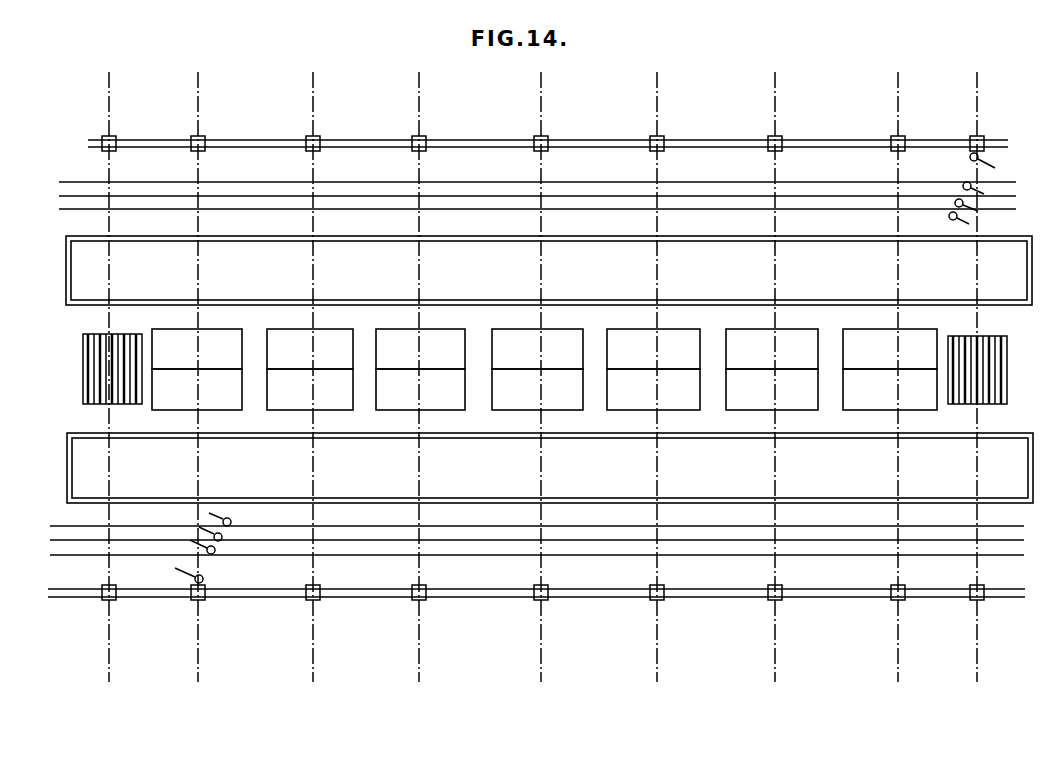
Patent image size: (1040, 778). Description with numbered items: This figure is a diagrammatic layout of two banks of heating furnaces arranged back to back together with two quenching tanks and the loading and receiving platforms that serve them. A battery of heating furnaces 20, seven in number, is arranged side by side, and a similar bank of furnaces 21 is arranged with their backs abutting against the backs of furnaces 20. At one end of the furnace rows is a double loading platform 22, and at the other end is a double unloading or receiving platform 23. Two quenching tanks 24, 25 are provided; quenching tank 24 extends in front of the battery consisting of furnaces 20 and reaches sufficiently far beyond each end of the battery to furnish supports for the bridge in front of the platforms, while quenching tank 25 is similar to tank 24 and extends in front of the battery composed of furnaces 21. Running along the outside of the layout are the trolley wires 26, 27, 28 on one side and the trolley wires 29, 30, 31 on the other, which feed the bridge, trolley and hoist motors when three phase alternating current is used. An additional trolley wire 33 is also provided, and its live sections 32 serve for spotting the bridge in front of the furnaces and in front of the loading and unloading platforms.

The battery of heating furnaces 20 is at (220, 406).
The bank of furnaces 21 is at (229, 335).
The double loading platform 22 is at (83, 363).
The double unloading or receiving platform 23 is at (1000, 348).
The quenching tank 24 is at (683, 490).
The quenching tank 25 is at (705, 255).
The trolley wire 26 is at (399, 526).
The trolley wire 27 is at (472, 540).
The trolley wire 28 is at (585, 555).
The trolley wire 29 is at (992, 211).
The trolley wire 30 is at (916, 196).
The trolley wire 31 is at (819, 182).
The live sections 32 is at (769, 598).
The additional trolley wire 33 is at (835, 597).